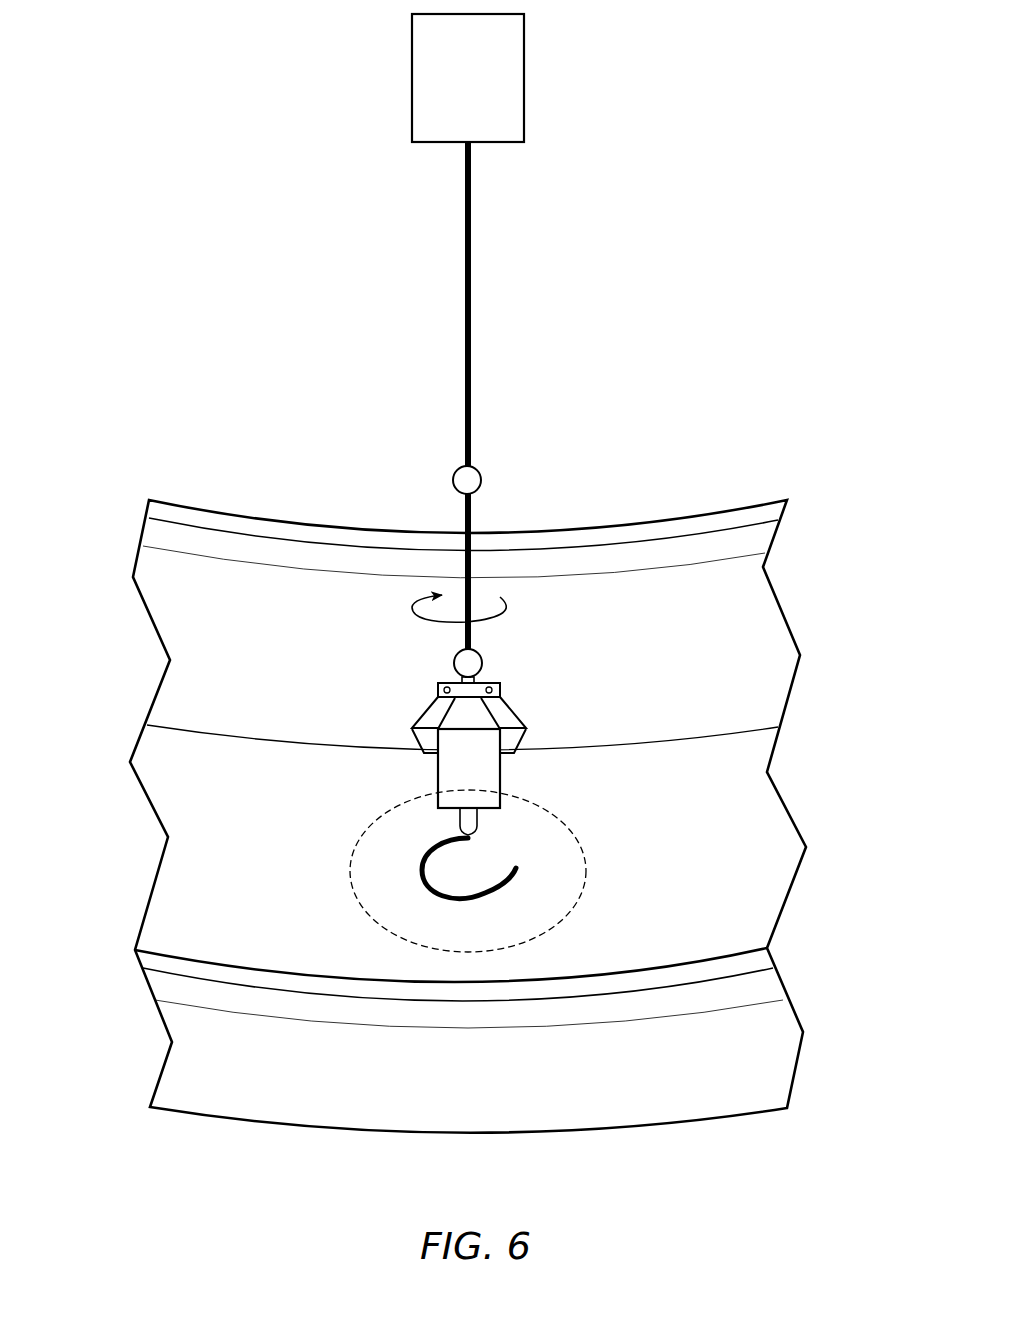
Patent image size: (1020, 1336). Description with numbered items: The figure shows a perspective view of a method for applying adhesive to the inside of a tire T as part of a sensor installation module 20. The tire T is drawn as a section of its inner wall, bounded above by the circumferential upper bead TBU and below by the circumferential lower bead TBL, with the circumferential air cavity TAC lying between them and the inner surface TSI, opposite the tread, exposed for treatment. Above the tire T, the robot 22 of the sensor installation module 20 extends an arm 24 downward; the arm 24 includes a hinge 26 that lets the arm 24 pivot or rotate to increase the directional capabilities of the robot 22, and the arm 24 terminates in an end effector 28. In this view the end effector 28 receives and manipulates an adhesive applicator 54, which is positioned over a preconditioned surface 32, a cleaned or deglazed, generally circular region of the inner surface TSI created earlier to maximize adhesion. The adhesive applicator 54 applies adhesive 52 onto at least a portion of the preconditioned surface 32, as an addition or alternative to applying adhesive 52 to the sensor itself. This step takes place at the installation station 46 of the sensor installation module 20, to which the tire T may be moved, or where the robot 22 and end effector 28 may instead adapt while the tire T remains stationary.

The sensor installation module 20 is at (435, 482).
The robot 22 is at (534, 38).
The arm 24 is at (472, 262).
The hinge 26 is at (482, 477).
The end effector 28 is at (513, 712).
The preconditioned surface 32 is at (588, 865).
The installation station 46 is at (435, 582).
The adhesive 52 is at (440, 897).
The adhesive applicator 54 is at (431, 781).
The tire T is at (434, 813).
The circumferential upper bead TBU is at (207, 508).
The circumferential air cavity TAC is at (206, 813).
The circumferential lower bead TBL is at (175, 950).
The inner surface TSI is at (261, 896).